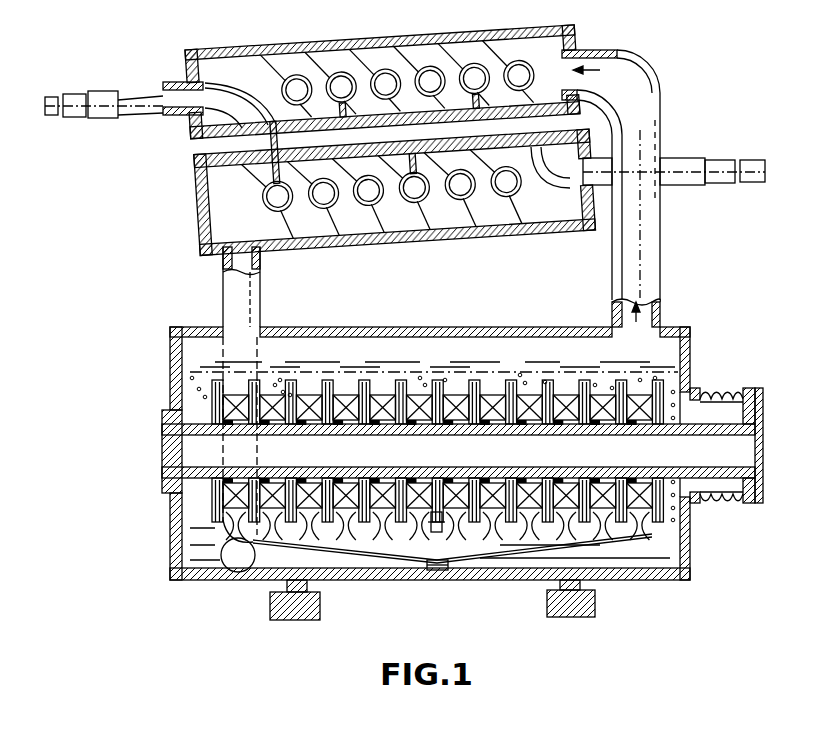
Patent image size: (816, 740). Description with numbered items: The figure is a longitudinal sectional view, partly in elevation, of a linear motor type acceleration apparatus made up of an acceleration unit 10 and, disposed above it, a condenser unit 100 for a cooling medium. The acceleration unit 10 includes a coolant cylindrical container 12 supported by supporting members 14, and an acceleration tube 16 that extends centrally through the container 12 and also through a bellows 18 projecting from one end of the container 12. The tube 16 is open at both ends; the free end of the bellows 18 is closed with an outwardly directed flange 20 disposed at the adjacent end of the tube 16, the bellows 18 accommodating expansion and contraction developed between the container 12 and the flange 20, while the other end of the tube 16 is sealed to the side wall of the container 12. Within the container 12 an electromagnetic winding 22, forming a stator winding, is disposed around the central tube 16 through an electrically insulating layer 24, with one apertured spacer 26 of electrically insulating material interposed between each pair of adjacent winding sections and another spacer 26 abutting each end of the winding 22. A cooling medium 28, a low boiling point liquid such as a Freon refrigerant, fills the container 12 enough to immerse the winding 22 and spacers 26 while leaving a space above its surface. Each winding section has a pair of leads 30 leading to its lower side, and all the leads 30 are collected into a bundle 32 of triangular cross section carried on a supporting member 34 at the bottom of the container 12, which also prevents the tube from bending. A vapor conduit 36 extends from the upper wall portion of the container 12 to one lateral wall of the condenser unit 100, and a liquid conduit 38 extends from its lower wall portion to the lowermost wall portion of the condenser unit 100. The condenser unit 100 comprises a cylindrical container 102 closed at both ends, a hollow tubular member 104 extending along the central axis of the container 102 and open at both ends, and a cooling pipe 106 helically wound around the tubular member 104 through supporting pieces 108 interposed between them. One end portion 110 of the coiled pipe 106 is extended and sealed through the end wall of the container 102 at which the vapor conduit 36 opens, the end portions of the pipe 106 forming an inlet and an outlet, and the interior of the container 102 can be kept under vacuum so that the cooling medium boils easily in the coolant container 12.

The acceleration unit 10 is at (460, 456).
The coolant cylindrical container 12 is at (515, 324).
The supporting members 14 is at (596, 606).
The acceleration tube 16 is at (742, 430).
The bellows 18 is at (726, 392).
The outwardly directed flange 20 is at (764, 407).
The electromagnetic winding 22 is at (492, 392).
The electrically insulating layer 24 is at (350, 392).
The apertured spacer 26 is at (379, 392).
The cooling medium 28 is at (566, 390).
The leads 30 is at (225, 538).
The bundle 32 is at (383, 547).
The supporting member 34 is at (437, 570).
The vapor conduit 36 is at (655, 273).
The liquid conduit 38 is at (223, 303).
The condenser unit 100 is at (405, 129).
The cylindrical container 102 is at (433, 34).
The hollow tubular member 104 is at (186, 151).
The cooling pipe 106 is at (291, 78).
The supporting pieces 108 is at (361, 80).
The end portion 110 is at (74, 100).